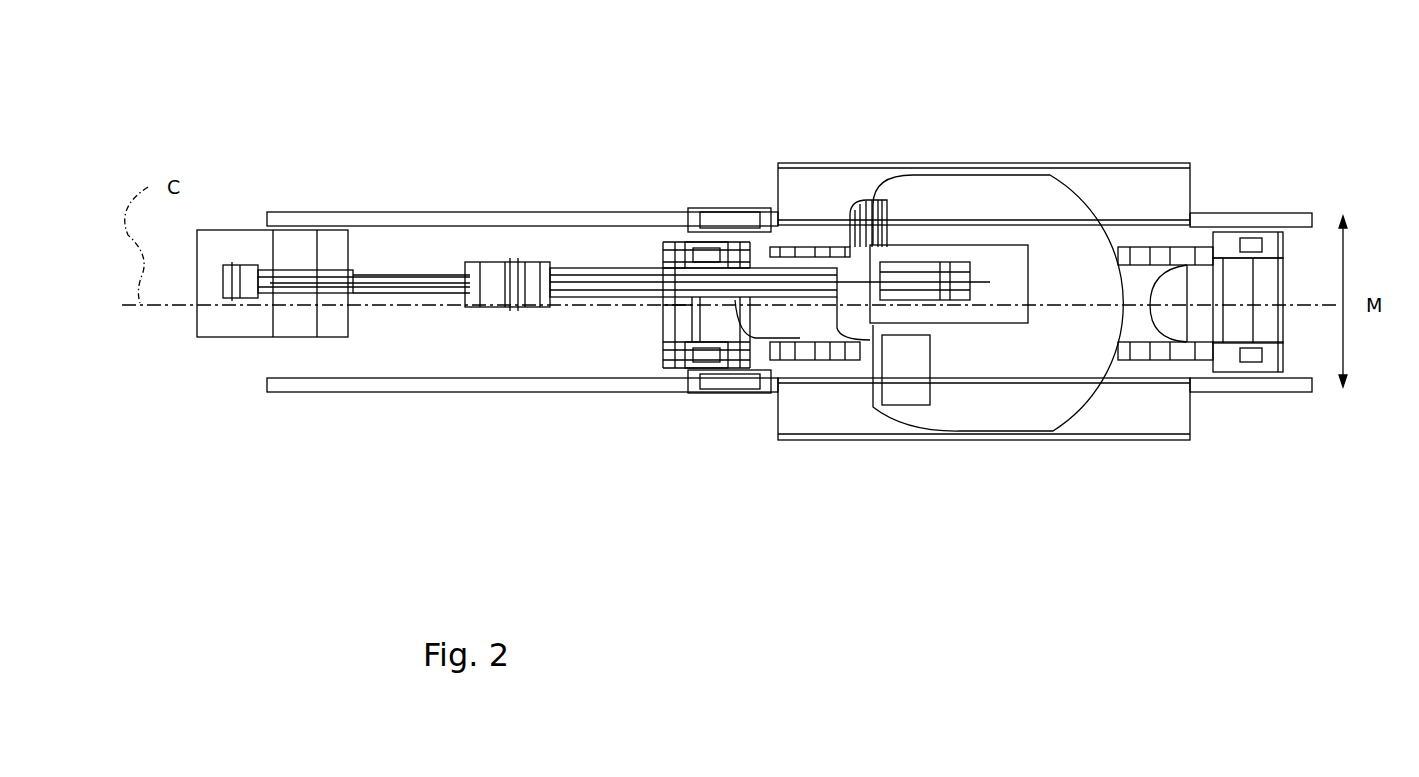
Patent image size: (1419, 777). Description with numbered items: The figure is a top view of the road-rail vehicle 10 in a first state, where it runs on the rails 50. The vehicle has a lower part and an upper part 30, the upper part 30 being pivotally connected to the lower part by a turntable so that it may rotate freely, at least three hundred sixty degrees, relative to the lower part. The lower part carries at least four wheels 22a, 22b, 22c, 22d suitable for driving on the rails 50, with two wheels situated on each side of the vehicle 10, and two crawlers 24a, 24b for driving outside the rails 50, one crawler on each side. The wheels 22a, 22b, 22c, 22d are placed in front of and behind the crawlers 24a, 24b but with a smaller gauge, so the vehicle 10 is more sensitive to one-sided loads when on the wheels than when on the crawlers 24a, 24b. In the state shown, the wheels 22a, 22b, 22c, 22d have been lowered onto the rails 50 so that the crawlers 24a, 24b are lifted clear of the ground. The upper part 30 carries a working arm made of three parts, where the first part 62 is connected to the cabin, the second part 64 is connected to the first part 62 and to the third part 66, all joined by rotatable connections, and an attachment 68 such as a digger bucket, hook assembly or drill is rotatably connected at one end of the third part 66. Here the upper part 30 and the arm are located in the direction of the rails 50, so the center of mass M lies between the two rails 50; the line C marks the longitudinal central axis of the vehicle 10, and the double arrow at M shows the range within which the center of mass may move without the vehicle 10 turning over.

The road-rail vehicle 10 is at (1148, 108).
The wheel 22a is at (712, 393).
The wheel 22b is at (1233, 397).
The wheel 22c is at (730, 210).
The wheel 22d is at (1250, 212).
The crawler 24a is at (865, 425).
The crawler 24b is at (850, 183).
The upper part 30 is at (1003, 185).
The rails 50 is at (497, 212).
The first part 62 is at (905, 243).
The second part 64 is at (606, 300).
The third part 66 is at (390, 270).
The attachment 68 is at (250, 322).